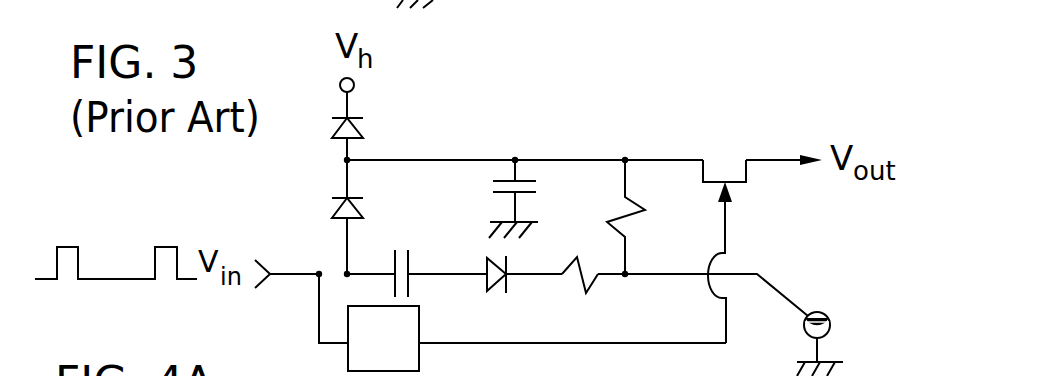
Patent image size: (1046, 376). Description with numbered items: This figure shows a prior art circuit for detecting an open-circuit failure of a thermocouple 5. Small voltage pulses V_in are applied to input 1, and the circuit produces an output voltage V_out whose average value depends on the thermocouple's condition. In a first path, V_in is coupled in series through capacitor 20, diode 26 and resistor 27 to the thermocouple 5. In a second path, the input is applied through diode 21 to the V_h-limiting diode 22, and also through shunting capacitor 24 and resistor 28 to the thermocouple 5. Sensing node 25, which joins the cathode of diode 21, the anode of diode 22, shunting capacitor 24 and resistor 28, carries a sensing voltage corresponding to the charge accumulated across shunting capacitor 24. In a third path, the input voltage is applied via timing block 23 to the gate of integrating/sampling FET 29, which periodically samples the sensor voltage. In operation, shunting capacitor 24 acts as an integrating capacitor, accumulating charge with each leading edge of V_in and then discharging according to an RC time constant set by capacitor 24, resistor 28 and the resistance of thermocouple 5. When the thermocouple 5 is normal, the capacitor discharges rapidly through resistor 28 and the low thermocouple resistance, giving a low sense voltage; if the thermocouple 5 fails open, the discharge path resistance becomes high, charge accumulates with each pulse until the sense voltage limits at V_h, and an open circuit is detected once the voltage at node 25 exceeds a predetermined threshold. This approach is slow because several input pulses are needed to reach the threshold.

The input 1 is at (300, 272).
The thermocouple 5 is at (833, 298).
The capacitor 20 is at (400, 247).
The diode 21 is at (365, 212).
The V_h-limiting diode 22 is at (363, 130).
The timing block 23 is at (419, 352).
The shunting capacitor 24 is at (536, 183).
The sensing node 25 is at (680, 160).
The diode 26 is at (495, 292).
The resistor 27 is at (593, 287).
The resistor 28 is at (633, 222).
The integrating/sampling FET 29 is at (743, 147).